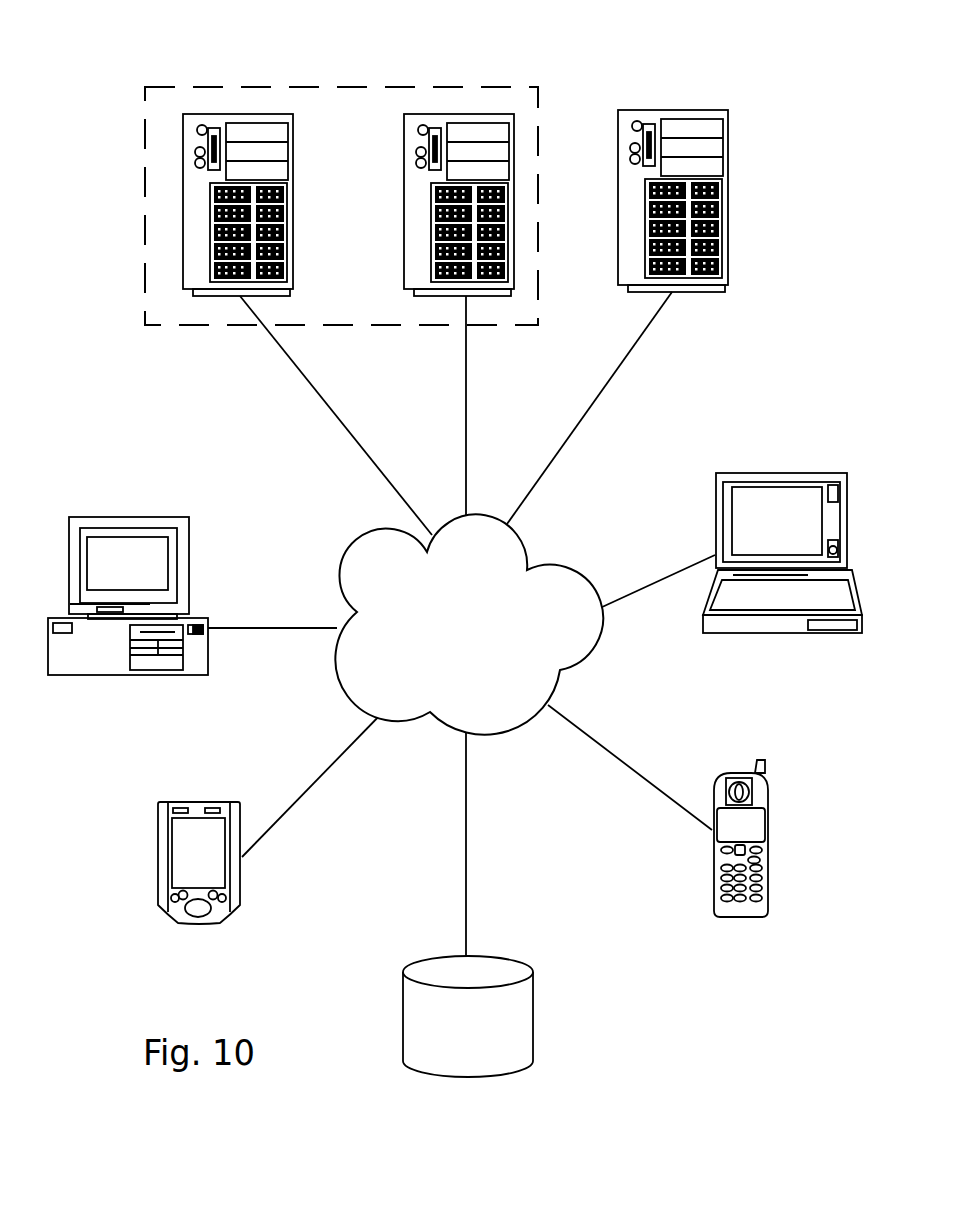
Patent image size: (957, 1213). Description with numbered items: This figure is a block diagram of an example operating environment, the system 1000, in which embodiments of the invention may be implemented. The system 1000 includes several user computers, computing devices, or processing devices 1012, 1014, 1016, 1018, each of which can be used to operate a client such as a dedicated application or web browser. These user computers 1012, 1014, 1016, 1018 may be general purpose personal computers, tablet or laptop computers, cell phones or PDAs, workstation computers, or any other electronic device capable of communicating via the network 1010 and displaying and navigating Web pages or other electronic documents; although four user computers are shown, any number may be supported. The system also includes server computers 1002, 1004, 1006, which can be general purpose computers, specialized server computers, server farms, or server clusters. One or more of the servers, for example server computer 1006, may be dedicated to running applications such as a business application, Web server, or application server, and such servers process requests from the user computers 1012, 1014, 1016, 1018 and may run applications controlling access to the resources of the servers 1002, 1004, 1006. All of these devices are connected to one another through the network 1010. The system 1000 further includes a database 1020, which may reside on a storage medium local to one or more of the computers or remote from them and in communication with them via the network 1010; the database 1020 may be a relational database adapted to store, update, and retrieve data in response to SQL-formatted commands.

The system 1000 is at (630, 61).
The server computer 1002 is at (217, 115).
The server computer 1004 is at (452, 115).
The server computer 1006 is at (728, 202).
The network 1010 is at (493, 667).
The user computer 1012 is at (127, 517).
The user computer 1014 is at (778, 473).
The user computer 1016 is at (737, 917).
The user computer 1018 is at (200, 925).
The database 1020 is at (503, 1055).